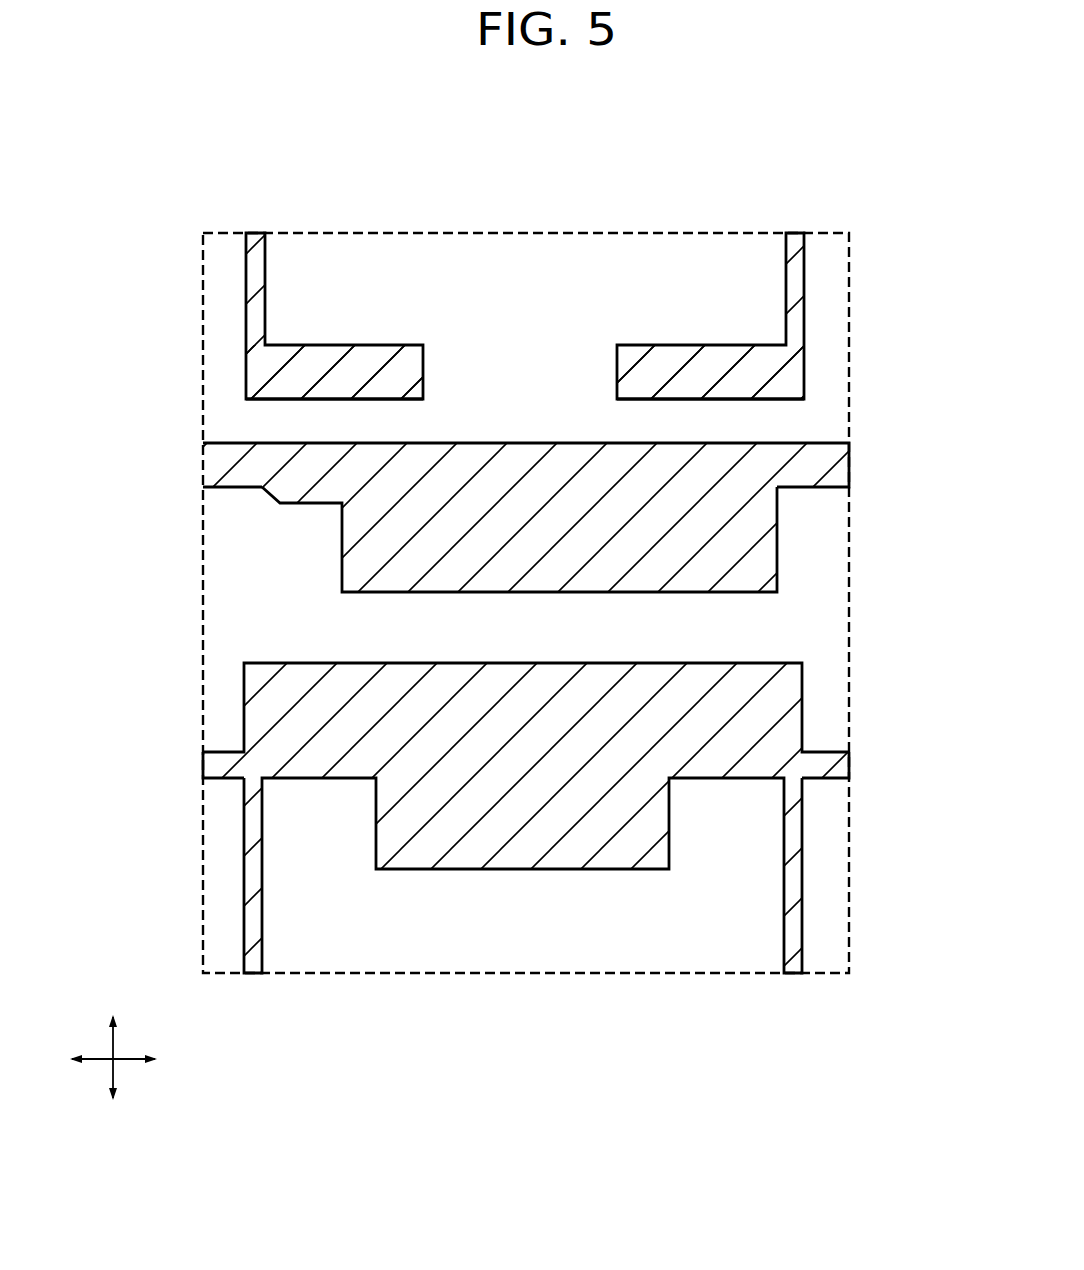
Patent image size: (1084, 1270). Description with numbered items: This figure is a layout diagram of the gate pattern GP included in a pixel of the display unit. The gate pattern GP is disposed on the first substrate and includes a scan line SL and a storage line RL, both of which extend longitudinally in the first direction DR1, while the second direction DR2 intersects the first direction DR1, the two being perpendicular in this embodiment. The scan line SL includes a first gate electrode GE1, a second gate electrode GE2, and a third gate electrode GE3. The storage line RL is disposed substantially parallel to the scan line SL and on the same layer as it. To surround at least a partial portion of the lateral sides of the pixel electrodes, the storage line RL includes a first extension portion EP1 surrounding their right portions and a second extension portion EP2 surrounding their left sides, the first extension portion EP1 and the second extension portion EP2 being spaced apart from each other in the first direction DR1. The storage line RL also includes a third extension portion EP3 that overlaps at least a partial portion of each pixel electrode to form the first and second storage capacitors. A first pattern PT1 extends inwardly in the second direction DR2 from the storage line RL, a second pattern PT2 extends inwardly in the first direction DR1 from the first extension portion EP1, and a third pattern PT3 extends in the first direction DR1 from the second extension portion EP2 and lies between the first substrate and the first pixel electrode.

The gate pattern GP is at (869, 212).
The first extension portion EP1 is at (804, 278).
The second extension portion EP2 is at (246, 267).
The third extension portion EP3 is at (244, 680).
The first pattern PT1 is at (628, 869).
The second pattern PT2 is at (698, 399).
The third pattern PT3 is at (353, 399).
The scan line SL is at (203, 464).
The first gate electrode GE1 is at (777, 556).
The second gate electrode GE2 is at (592, 592).
The third gate electrode GE3 is at (525, 592).
The storage line RL is at (203, 765).
The first direction DR1 is at (138, 1059).
The second direction DR2 is at (116, 1073).